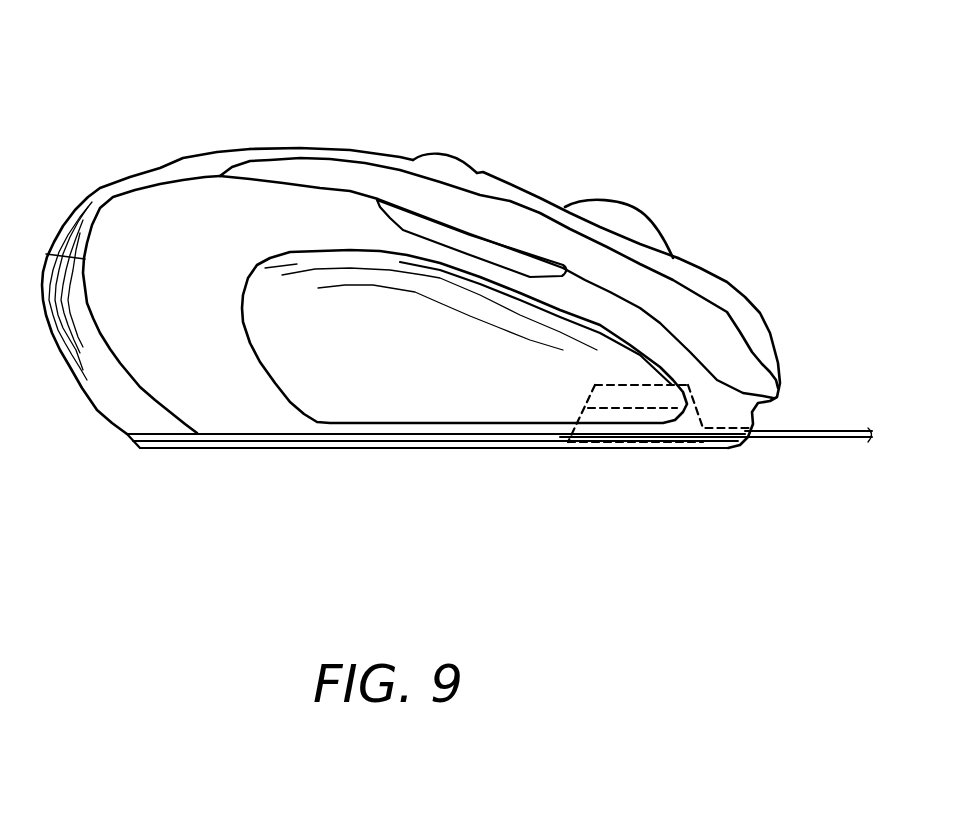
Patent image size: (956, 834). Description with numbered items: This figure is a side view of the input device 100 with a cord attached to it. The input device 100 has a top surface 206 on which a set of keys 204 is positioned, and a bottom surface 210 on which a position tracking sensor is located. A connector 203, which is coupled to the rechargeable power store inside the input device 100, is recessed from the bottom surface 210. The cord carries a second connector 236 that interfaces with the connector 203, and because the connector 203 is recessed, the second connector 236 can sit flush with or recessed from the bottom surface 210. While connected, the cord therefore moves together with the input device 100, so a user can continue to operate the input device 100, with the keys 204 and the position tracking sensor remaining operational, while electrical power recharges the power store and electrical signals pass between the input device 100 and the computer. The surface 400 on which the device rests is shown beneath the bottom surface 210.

The input device 100 is at (203, 122).
The top surface 206 is at (308, 146).
The set of keys 204 is at (571, 204).
The connector 203 is at (588, 391).
The second connector 236 is at (620, 448).
The bottom surface 210 is at (325, 456).
The support surface 400 is at (848, 443).